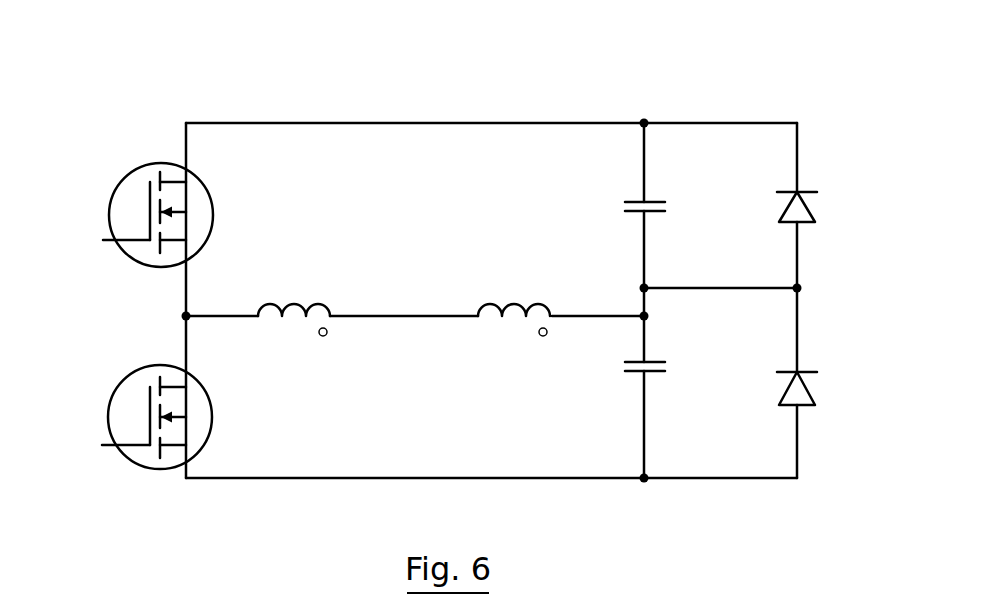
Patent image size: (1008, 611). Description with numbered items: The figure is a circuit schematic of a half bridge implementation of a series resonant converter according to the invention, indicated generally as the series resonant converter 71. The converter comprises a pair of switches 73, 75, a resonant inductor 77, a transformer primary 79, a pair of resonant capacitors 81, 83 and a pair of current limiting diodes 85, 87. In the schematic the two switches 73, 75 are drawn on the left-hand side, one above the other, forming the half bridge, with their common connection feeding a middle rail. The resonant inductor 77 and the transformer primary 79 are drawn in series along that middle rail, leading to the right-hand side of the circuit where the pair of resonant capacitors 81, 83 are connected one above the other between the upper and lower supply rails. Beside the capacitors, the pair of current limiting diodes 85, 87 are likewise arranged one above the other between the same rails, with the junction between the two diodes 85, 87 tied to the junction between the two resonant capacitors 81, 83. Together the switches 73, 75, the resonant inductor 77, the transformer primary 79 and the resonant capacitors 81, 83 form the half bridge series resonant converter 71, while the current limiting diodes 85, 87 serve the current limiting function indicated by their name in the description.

The series resonant converter 71 is at (311, 87).
The switch 73 is at (110, 212).
The switch 75 is at (138, 463).
The resonant inductor 77 is at (327, 302).
The transformer primary 79 is at (523, 302).
The resonant capacitor 81 is at (637, 198).
The resonant capacitor 83 is at (638, 373).
The current limiting diode 85 is at (813, 213).
The current limiting diode 87 is at (813, 395).